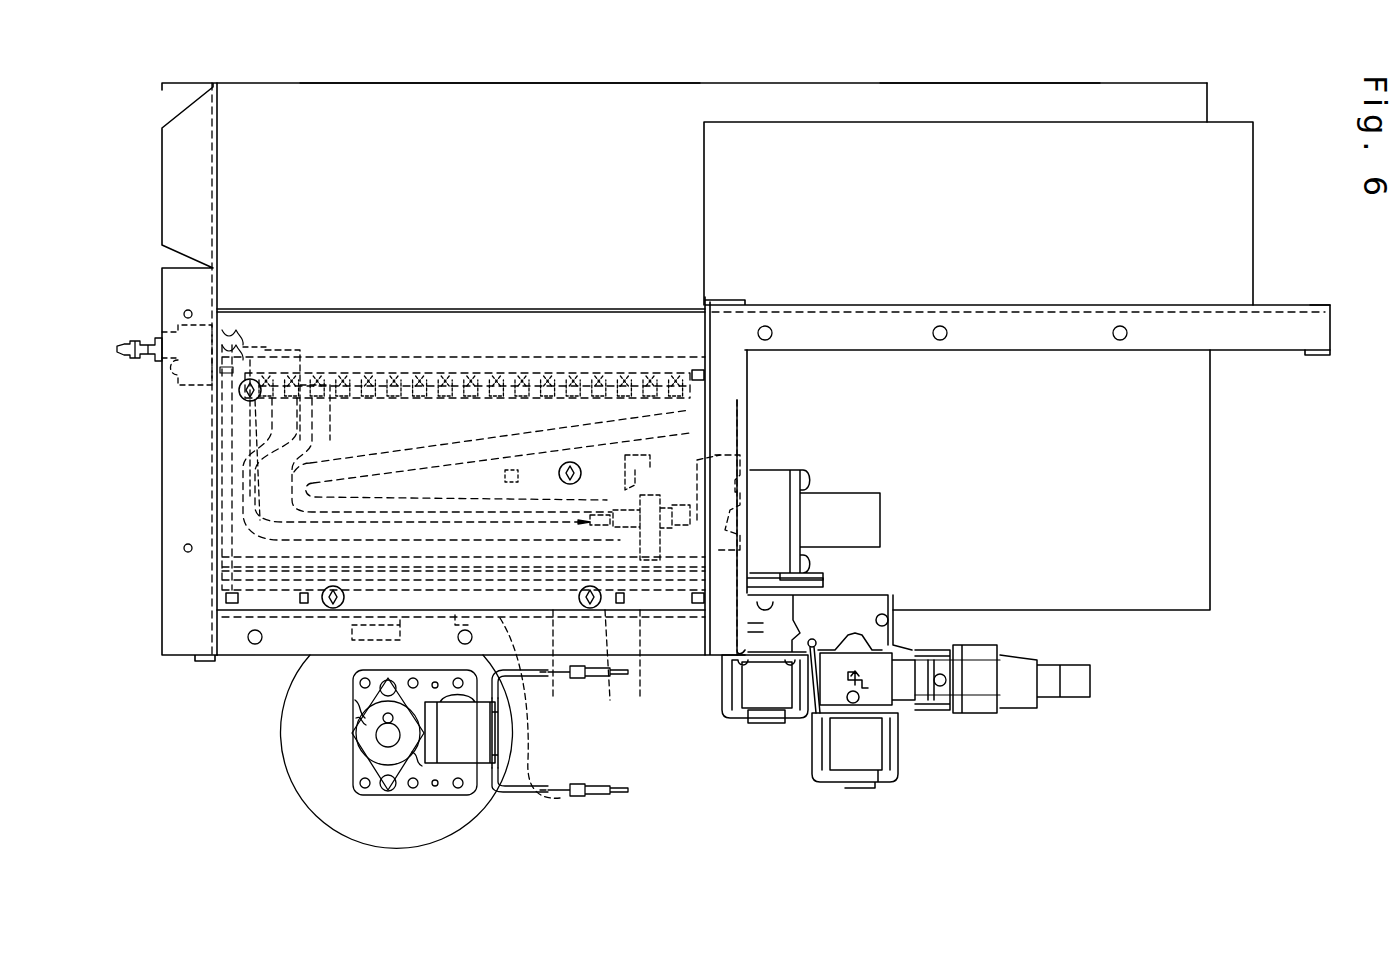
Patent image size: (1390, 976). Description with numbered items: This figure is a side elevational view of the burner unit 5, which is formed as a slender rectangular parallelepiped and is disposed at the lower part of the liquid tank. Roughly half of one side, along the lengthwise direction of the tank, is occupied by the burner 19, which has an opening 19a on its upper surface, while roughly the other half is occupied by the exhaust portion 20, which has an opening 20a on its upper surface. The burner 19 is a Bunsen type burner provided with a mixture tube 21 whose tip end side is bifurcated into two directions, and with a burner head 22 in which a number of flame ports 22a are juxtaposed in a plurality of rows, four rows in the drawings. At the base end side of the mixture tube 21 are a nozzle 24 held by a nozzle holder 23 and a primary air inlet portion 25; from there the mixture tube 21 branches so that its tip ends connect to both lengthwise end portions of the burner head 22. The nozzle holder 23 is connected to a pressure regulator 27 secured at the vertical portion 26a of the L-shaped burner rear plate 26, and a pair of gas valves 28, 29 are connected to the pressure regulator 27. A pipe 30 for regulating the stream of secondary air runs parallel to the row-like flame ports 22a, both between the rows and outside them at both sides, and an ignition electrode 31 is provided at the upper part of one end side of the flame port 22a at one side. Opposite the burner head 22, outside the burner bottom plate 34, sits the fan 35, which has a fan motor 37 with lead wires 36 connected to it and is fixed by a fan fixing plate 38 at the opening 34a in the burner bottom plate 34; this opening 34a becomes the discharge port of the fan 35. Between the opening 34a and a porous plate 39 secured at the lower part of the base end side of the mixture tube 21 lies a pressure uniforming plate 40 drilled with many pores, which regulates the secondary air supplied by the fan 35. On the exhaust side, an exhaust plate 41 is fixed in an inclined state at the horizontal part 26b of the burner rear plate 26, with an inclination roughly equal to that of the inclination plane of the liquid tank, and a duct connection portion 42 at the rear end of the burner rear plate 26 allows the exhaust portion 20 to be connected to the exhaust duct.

The burner unit 5 is at (1236, 80).
The burner 19 is at (426, 80).
The opening 19a is at (510, 115).
The exhaust portion 20 is at (892, 80).
The opening 20a is at (965, 100).
The mixture tube 21 is at (255, 473).
The burner head 22 is at (542, 368).
The flame ports 22a is at (435, 368).
The nozzle holder 23 is at (720, 458).
The nozzle 24 is at (640, 540).
The primary air inlet portion 25 is at (641, 671).
The burner rear plate 26 is at (875, 305).
The vertical portion 26a is at (748, 380).
The horizontal part 26b is at (1100, 350).
The pressure regulator 27 is at (872, 512).
The gas valve 28 is at (750, 705).
The gas valve 29 is at (855, 765).
The pipe 30 is at (338, 355).
The ignition electrode 31 is at (245, 358).
The burner bottom plate 34 is at (272, 612).
The opening 34a is at (372, 642).
The fan 35 is at (298, 810).
The lead wires 36 is at (575, 795).
The fan motor 37 is at (358, 748).
The fan fixing plate 38 is at (492, 708).
The porous plate 39 is at (599, 671).
The pressure uniforming plate 40 is at (579, 671).
The exhaust plate 41 is at (1017, 188).
The duct connection portion 42 is at (1296, 306).